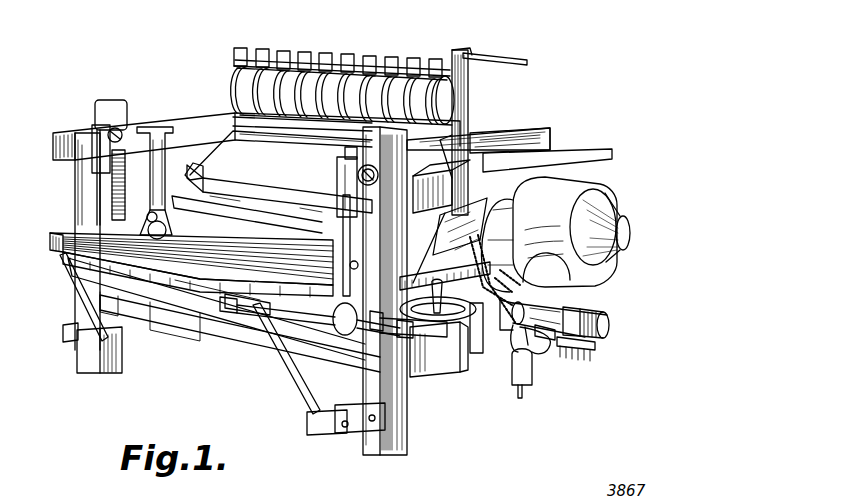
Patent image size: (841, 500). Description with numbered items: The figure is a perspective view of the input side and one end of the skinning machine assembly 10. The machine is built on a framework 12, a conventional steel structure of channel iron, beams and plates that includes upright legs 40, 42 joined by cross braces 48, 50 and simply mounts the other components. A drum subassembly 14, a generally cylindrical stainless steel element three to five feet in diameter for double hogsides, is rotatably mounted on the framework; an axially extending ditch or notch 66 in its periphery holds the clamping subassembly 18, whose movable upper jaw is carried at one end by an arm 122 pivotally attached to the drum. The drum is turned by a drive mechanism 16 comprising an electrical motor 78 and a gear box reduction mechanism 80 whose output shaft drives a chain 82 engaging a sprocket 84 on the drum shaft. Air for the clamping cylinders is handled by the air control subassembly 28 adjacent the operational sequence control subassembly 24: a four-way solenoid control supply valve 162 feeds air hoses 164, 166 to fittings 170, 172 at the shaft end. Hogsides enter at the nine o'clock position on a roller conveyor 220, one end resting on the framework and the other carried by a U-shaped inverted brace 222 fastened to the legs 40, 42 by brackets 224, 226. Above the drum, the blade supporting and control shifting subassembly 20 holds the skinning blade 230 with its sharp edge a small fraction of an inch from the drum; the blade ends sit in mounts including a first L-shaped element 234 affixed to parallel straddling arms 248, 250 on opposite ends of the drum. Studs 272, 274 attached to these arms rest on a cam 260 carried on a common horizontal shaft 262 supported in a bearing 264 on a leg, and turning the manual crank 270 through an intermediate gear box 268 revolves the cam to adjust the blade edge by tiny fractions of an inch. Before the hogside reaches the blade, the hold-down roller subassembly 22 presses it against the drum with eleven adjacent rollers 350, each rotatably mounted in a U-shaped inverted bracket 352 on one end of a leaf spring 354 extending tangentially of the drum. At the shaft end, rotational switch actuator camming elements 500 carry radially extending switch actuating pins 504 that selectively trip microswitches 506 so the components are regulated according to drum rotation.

The skinning machine assembly 10 is at (520, 53).
The framework subassembly 12 is at (78, 205).
The drum subassembly 14 is at (227, 160).
The drive assembly 16 is at (590, 180).
The clamping subassembly 18 is at (201, 191).
The blade supporting and control shifting subassembly 20 is at (227, 113).
The hold-down roller subassembly 22 is at (327, 63).
The operational sequence control subassembly 24 is at (613, 317).
The air control subassembly 28 is at (525, 303).
The upright leg 40 is at (117, 372).
The upright leg 42 is at (383, 438).
The cross brace 48 is at (183, 312).
The cross brace 50 is at (463, 283).
The ditch or notch 66 is at (233, 227).
The electrical motor 78 is at (600, 272).
The gear box reduction mechanism 80 is at (620, 222).
The chain 82 is at (502, 322).
The sprocket 84 is at (517, 325).
The arm 122 is at (425, 217).
The four-way solenoid control supply valve 162 is at (532, 381).
The air hose 164 is at (521, 397).
The air hose 166 is at (540, 362).
The fitting 170 is at (515, 340).
The fitting 172 is at (540, 312).
The roller conveyor mechanism 220 is at (170, 252).
The U-shaped inverted brace 222 is at (280, 352).
The bracket 224 is at (70, 342).
The bracket 226 is at (347, 433).
The skinning blade 230 is at (285, 132).
The first L-shaped element 234 is at (240, 50).
The straddling arm 248 is at (197, 178).
The straddling arm 250 is at (338, 168).
The cam 260 is at (333, 325).
The horizontal shaft 262 is at (263, 297).
The bearing 264 is at (342, 296).
The intermediate gear box 268 is at (433, 352).
The manual crank 270 is at (405, 333).
The stud 272 is at (97, 187).
The stud 274 is at (343, 237).
The hold-down rollers 350 is at (473, 50).
The U-shaped inverted bracket 352 is at (440, 103).
The leaf spring 354 is at (380, 62).
The rotational switch actuator camming element 500 is at (609, 330).
The switch actuating pin 504 is at (575, 308).
The microswitch 506 is at (595, 346).